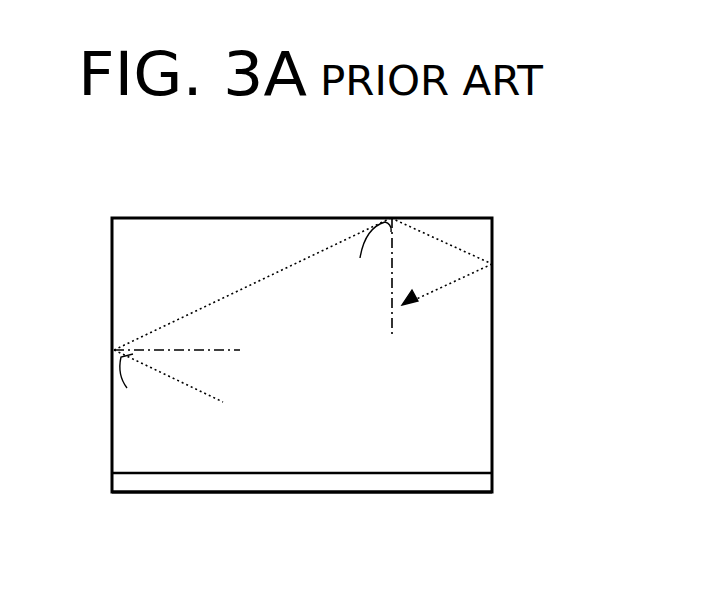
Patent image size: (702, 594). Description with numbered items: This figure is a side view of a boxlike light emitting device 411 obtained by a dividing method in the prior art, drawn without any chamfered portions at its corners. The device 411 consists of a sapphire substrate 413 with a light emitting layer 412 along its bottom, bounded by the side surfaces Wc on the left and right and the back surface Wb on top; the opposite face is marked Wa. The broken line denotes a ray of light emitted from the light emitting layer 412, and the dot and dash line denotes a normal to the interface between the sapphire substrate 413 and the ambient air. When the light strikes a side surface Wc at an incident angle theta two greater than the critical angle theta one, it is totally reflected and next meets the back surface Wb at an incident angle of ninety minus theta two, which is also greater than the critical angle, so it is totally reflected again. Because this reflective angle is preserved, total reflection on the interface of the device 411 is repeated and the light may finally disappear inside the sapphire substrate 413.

The light emitting device 411 is at (470, 188).
The light emitting layer 412 is at (480, 481).
The sapphire substrate 413 is at (480, 377).
The bottom surface Wa is at (411, 492).
The back surface Wb is at (407, 217).
The side surfaces Wc is at (118, 337).